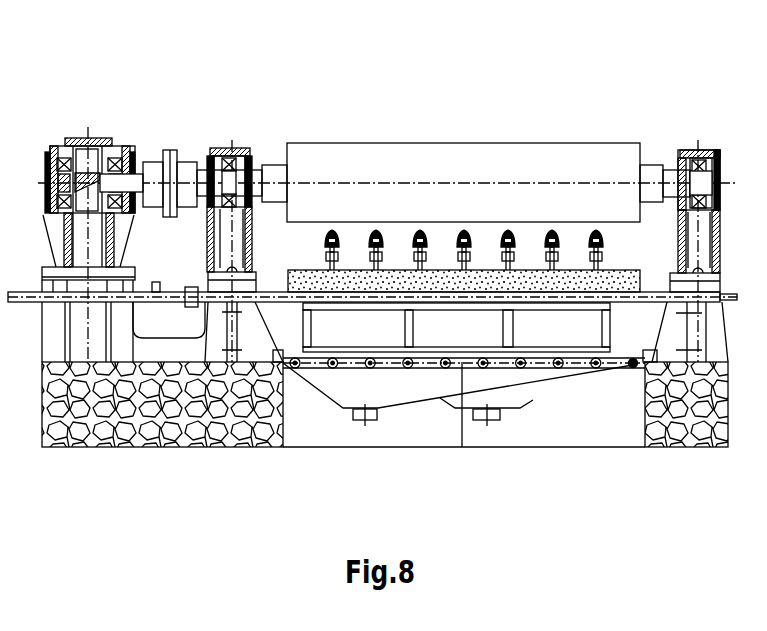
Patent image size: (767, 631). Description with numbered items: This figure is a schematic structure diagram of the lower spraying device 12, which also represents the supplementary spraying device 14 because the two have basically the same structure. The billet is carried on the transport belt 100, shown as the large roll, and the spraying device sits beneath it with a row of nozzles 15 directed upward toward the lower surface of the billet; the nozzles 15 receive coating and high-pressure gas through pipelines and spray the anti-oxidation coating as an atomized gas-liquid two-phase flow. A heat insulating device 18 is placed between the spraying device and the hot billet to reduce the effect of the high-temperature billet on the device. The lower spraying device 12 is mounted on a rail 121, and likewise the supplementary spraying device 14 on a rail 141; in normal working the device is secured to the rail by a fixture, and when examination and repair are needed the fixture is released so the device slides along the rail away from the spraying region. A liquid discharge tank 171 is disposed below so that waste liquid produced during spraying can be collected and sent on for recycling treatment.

The transport belt 100 is at (612, 152).
The heat insulating device 18 is at (435, 280).
The nozzles 15 is at (419, 229).
The lower spraying device 12 is at (327, 171).
The supplementary spraying device 14 is at (377, 229).
The rail 121 is at (396, 432).
The rail 141 is at (347, 367).
The liquid discharge tank 171 is at (512, 397).